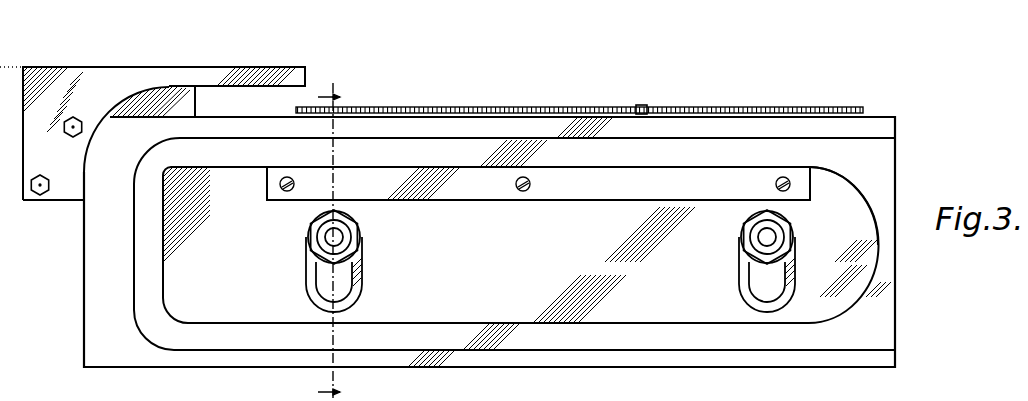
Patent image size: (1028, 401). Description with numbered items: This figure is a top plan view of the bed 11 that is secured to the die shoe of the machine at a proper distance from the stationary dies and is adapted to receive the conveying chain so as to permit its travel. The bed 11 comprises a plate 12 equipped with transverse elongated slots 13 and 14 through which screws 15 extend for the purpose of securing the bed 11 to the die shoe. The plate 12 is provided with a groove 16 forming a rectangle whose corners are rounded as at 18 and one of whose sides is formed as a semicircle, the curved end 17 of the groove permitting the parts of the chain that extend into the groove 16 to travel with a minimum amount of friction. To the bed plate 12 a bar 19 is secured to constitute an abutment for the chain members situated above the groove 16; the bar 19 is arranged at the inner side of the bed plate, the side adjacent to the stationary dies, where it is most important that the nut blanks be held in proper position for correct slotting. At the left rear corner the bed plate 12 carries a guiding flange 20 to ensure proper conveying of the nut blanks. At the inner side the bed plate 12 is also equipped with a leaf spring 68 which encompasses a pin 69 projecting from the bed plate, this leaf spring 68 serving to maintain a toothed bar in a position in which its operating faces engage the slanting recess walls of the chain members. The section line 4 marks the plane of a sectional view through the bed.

The section line 4- 4 is at (331, 238).
The bed 11 is at (587, 312).
The plate 12 is at (302, 262).
The transverse elongated slot 13 is at (345, 286).
The transverse elongated slot 14 is at (757, 286).
The screw 15 is at (351, 239).
The groove 16 is at (880, 153).
The rounded end 17 is at (855, 182).
The rounded corner 18 is at (173, 167).
The bar 19 is at (567, 187).
The guiding flange 20 is at (115, 77).
The leaf spring 68 is at (471, 110).
The pin 69 is at (642, 104).